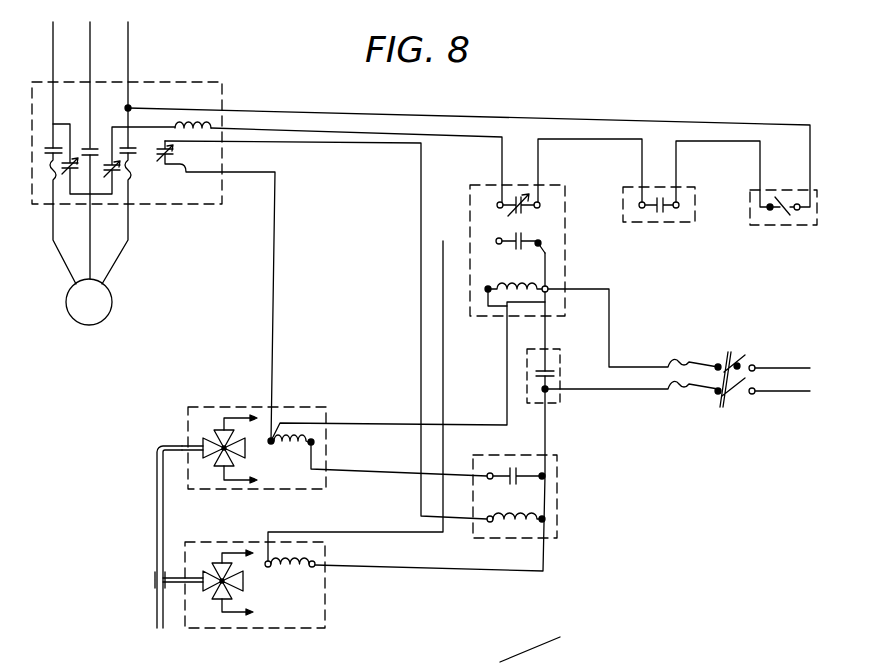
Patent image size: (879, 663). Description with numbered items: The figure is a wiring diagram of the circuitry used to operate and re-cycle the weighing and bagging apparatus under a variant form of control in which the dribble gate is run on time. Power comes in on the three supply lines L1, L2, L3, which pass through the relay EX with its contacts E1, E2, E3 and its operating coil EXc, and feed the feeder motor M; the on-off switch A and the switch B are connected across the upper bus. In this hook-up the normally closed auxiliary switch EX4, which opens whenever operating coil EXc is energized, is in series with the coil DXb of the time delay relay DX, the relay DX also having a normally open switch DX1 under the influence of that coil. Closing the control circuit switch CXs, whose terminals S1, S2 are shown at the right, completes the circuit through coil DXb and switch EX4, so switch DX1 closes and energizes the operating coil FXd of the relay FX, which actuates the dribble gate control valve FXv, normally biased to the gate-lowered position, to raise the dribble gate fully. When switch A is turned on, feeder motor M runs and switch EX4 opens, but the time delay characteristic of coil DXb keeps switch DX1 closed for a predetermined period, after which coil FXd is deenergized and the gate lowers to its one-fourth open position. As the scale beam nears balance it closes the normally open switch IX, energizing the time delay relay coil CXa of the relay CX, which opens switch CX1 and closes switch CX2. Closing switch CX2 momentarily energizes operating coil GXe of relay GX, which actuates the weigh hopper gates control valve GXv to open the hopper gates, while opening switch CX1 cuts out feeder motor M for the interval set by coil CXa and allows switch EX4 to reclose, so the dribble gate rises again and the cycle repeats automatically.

The supply line L1 is at (63, 145).
The supply line L2 is at (103, 143).
The supply line L3 is at (130, 145).
The contact E1 is at (57, 146).
The contact E2 is at (90, 147).
The contact E3 is at (130, 150).
The relay EX is at (205, 94).
The operating coil EXc is at (203, 127).
The auxiliary switch EX4 is at (216, 291).
The feeder motor M is at (89, 302).
The relay CX is at (553, 236).
The switch CX1 is at (506, 198).
The switch CX2 is at (546, 246).
The time delay relay coil CXa is at (497, 300).
The switch B is at (680, 223).
The on-off switch A is at (776, 225).
The switch IX is at (553, 399).
The control circuit switch CXs is at (720, 393).
The terminal S1 is at (806, 370).
The terminal S2 is at (807, 392).
The relay FX is at (275, 410).
The dribble gate control valve FXv is at (222, 447).
The operating coil FXd is at (318, 442).
The time delay relay DX is at (550, 497).
The switch DX1 is at (508, 470).
The time delay relay coil DXb is at (510, 526).
The relay GX is at (305, 600).
The operating coil GXe is at (318, 566).
The weigh hopper gates control valve GXv is at (220, 584).